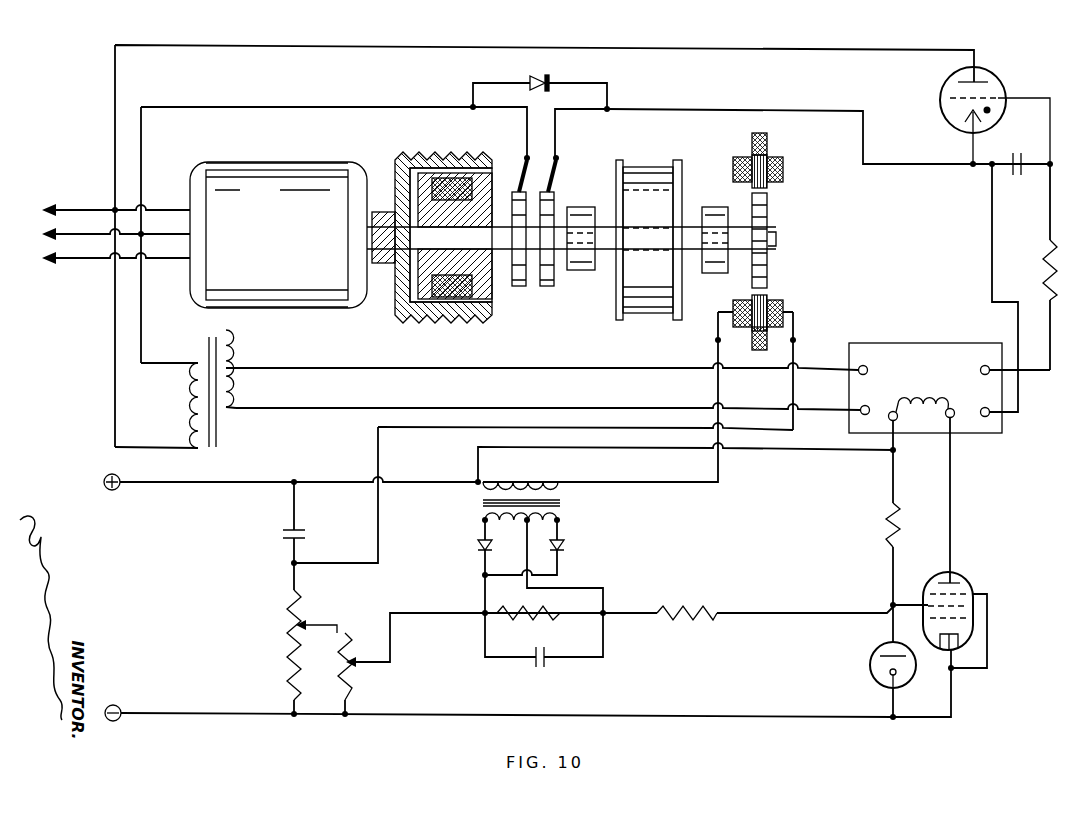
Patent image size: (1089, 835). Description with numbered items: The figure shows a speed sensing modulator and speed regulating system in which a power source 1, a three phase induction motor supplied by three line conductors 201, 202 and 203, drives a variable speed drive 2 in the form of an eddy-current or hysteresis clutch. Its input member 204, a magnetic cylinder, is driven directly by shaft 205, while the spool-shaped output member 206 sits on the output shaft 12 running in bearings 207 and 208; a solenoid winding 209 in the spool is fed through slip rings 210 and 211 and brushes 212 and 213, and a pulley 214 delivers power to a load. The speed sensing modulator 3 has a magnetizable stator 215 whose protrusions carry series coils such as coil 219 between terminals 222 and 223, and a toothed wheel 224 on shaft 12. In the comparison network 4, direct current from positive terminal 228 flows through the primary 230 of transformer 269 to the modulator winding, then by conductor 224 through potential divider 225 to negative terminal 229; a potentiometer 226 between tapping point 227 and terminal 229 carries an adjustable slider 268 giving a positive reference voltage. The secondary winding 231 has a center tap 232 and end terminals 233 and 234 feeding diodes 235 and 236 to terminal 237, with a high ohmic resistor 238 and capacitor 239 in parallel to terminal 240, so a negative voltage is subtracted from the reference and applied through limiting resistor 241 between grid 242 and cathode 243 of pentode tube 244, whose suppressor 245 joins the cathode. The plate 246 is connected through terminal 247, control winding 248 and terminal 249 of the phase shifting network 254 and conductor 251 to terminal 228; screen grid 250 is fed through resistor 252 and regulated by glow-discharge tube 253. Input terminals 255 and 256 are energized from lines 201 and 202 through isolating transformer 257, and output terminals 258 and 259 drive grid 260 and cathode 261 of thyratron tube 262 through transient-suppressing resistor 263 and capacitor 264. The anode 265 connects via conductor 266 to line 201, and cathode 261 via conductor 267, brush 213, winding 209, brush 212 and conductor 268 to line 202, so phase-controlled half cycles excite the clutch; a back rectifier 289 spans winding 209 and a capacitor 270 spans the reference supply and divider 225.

The power source 1 is at (264, 254).
The variable speed drive 2 is at (478, 332).
The speed sensing modulator 3 is at (795, 180).
The comparison network 4 is at (664, 543).
The output shaft 12 is at (432, 247).
The line conductor 201 is at (95, 210).
The line conductor 202 is at (95, 234).
The line conductor 203 is at (95, 258).
The input member 204 is at (402, 320).
The shaft 205 is at (385, 263).
The output member 206 is at (490, 300).
The bearing 207 is at (586, 271).
The bearing 208 is at (712, 215).
The solenoid winding 209 is at (442, 175).
The slip ring 210 is at (518, 286).
The slip ring 211 is at (547, 286).
The brush 212 is at (520, 168).
The brush 213 is at (549, 182).
The pulley 214 is at (650, 167).
The magnetizable stator 215 is at (768, 140).
The coil 219 is at (783, 305).
The terminal 222 is at (715, 341).
The terminal 223 is at (795, 340).
The toothed wheel 224 is at (770, 216).
The potential divider 225 is at (287, 638).
The potentiometer 226 is at (350, 672).
The tapping point 227 is at (306, 622).
The positive terminal 228 is at (104, 483).
The negative terminal 229 is at (110, 705).
The primary 230 is at (535, 480).
The secondary winding 231 is at (480, 520).
The center tap 232 is at (527, 535).
The end terminal 233 is at (478, 530).
The end terminal 234 is at (562, 526).
The diode 235 is at (476, 548).
The diode 236 is at (565, 548).
The terminal 237 is at (480, 617).
The high ohmic resistor 238 is at (538, 613).
The capacitor 239 is at (536, 656).
The terminal 240 is at (606, 616).
The limiting resistor 241 is at (685, 610).
The grid 242 is at (966, 620).
The cathode 243 is at (945, 660).
The pentode tube 244 is at (970, 580).
The suppressor 245 is at (987, 594).
The plate 246 is at (956, 580).
The terminal 247 is at (953, 420).
The control winding 248 is at (940, 398).
The terminal 249 is at (897, 420).
The screen grid 250 is at (928, 598).
The conductor 251 is at (590, 448).
The resistor 252 is at (886, 524).
The glow-discharge tube 253 is at (870, 672).
The phase shifting network 254 is at (918, 343).
The alternating current input terminal 255 is at (863, 365).
The alternating current input terminal 256 is at (860, 407).
The isolating transformer 257 is at (213, 405).
The output terminal 258 is at (981, 368).
The output terminal 259 is at (990, 416).
The grid 260 is at (1000, 98).
The cathode 261 is at (960, 118).
The thyratron tube 262 is at (937, 93).
The transient-suppressing resistor 263 is at (1045, 252).
The transient-suppressing capacitor 264 is at (1017, 178).
The anode 265 is at (988, 82).
The conductor 266 is at (712, 51).
The conductor 267 is at (803, 111).
The adjustable slider 268 is at (375, 107).
The transformer 269 is at (483, 497).
The capacitor 270 is at (286, 534).
The back rectifier 289 is at (560, 76).